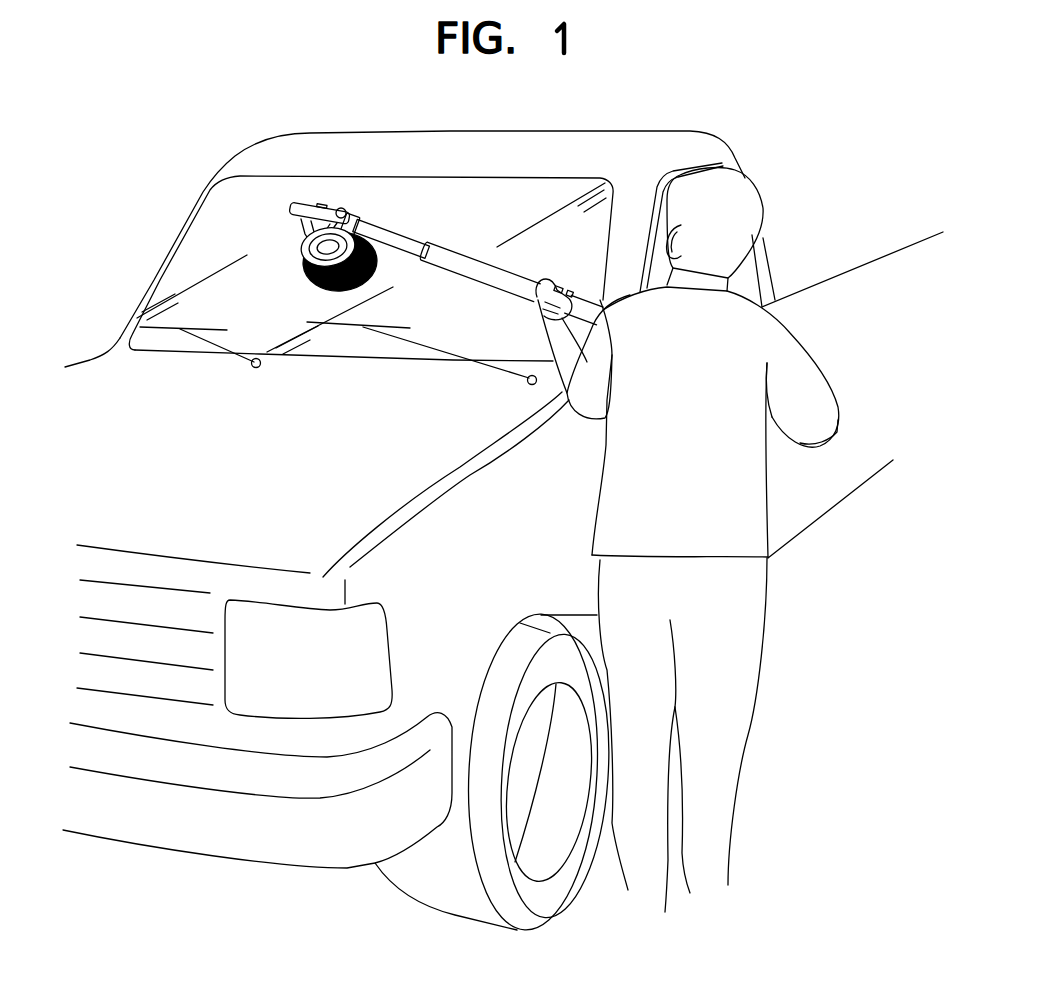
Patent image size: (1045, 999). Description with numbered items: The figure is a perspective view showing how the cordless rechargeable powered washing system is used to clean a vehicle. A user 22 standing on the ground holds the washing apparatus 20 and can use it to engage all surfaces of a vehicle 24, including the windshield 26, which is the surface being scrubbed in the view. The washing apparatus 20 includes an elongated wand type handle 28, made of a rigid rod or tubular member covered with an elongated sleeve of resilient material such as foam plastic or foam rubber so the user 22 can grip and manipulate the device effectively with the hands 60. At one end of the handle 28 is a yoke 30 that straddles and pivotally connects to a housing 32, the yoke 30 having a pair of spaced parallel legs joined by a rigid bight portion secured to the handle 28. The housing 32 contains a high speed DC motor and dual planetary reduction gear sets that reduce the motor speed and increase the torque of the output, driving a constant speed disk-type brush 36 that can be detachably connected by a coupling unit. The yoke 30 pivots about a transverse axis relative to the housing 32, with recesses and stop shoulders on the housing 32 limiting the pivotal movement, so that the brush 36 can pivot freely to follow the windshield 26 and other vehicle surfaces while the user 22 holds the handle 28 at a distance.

The washing apparatus 20 is at (460, 246).
The user 22 is at (743, 603).
The vehicle 24 is at (822, 273).
The windshield 26 is at (250, 198).
The elongated wand type handle 28 is at (494, 277).
The yoke 30 is at (352, 207).
The housing 32 is at (301, 233).
The brush 36 is at (305, 284).
The hands 60 is at (535, 307).